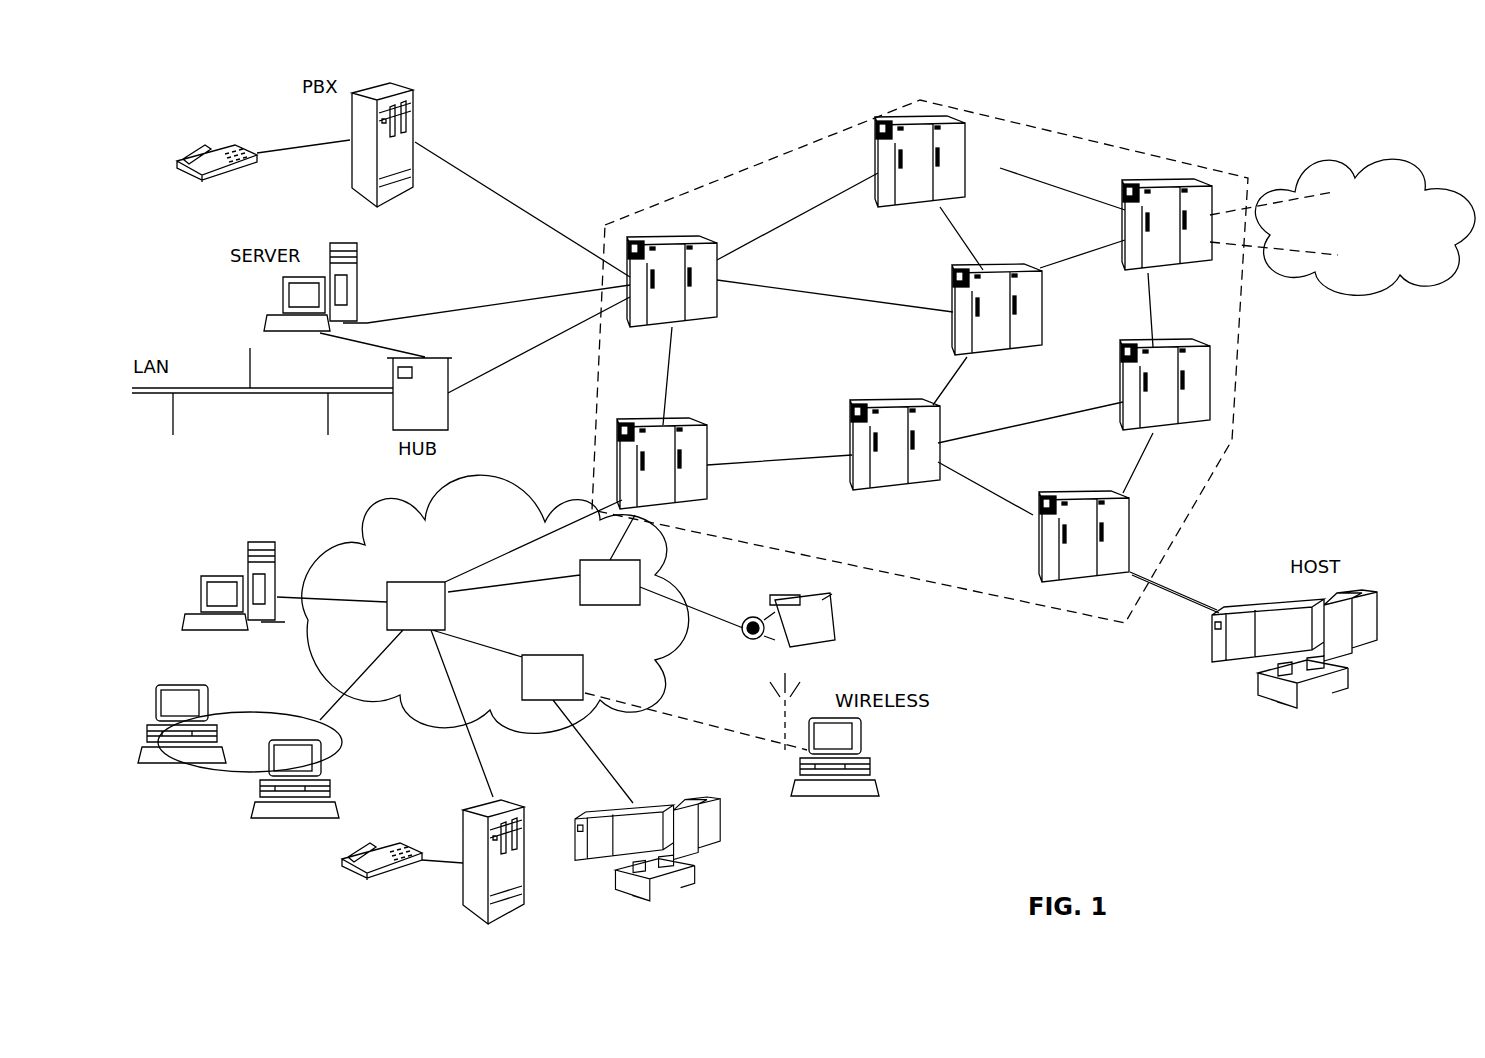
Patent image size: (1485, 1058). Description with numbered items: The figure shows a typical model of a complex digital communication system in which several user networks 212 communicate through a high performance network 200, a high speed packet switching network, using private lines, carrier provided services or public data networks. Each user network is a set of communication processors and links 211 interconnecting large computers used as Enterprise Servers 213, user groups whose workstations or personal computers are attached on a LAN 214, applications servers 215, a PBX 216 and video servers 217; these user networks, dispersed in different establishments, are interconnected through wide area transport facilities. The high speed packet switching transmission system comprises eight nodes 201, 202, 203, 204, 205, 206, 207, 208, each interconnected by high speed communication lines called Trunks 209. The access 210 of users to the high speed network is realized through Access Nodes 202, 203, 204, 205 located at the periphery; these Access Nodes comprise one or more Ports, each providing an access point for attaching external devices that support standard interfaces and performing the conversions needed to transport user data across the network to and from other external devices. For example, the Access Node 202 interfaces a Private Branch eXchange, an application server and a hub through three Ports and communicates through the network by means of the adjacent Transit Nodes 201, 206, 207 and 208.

The high performance network 200 is at (682, 190).
The node 201 is at (963, 140).
The access node 202 is at (662, 235).
The access node 203 is at (1072, 473).
The access node 204 is at (1177, 267).
The access node 205 is at (707, 492).
The node 206 is at (907, 490).
The node 207 is at (1163, 435).
The node 208 is at (993, 267).
The trunk 209 is at (1072, 263).
The access 210 is at (1163, 577).
The communication processors and links 211 is at (453, 487).
The user network 212 is at (1310, 165).
The enterprise server 213 is at (720, 810).
The LAN 214 is at (290, 715).
The applications server 215 is at (202, 597).
The PBX 216 is at (467, 913).
The video server 217 is at (787, 590).